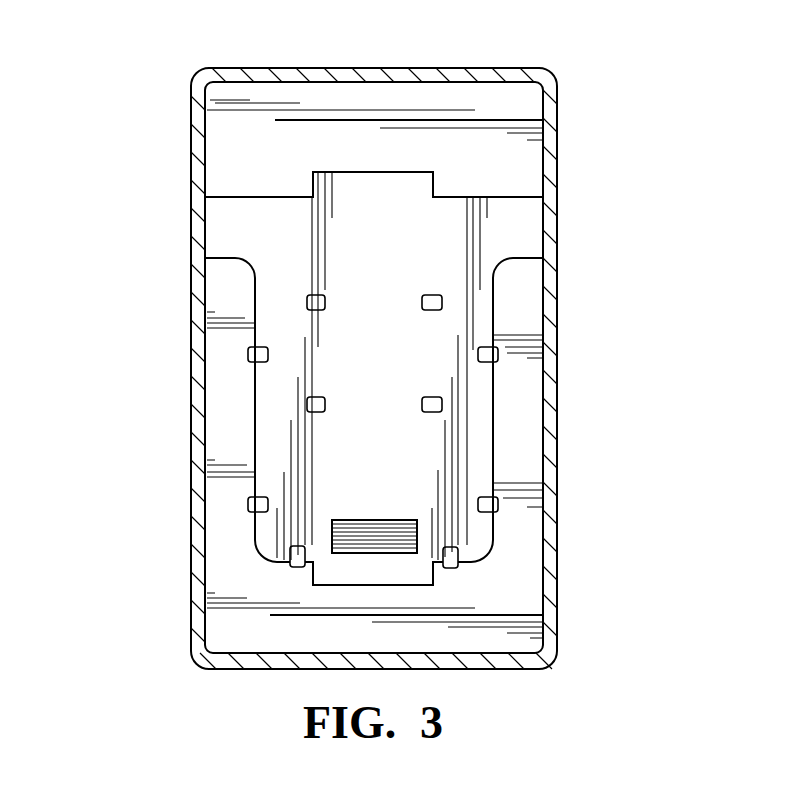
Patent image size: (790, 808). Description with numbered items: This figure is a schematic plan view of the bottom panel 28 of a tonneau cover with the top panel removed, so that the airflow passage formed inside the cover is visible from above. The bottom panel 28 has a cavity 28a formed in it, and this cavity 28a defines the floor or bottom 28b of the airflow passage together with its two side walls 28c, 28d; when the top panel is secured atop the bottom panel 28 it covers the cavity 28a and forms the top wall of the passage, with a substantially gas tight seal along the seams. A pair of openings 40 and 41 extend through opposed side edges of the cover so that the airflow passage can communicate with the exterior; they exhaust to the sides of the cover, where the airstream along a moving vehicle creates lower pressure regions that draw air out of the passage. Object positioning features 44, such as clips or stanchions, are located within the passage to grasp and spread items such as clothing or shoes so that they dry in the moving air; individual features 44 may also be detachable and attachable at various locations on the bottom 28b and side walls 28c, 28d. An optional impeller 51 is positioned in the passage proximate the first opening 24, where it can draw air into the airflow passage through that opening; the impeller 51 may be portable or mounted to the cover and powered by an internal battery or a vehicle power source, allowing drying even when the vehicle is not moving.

The first opening 24 is at (438, 572).
The bottom panel 28 is at (199, 137).
The cavity 28a is at (398, 232).
The bottom 28b is at (405, 349).
The side wall 28c is at (253, 433).
The side wall 28d is at (493, 317).
The opening 40 is at (213, 227).
The opening 41 is at (545, 223).
The object positioning feature 44 is at (307, 302).
The impeller 51 is at (332, 530).